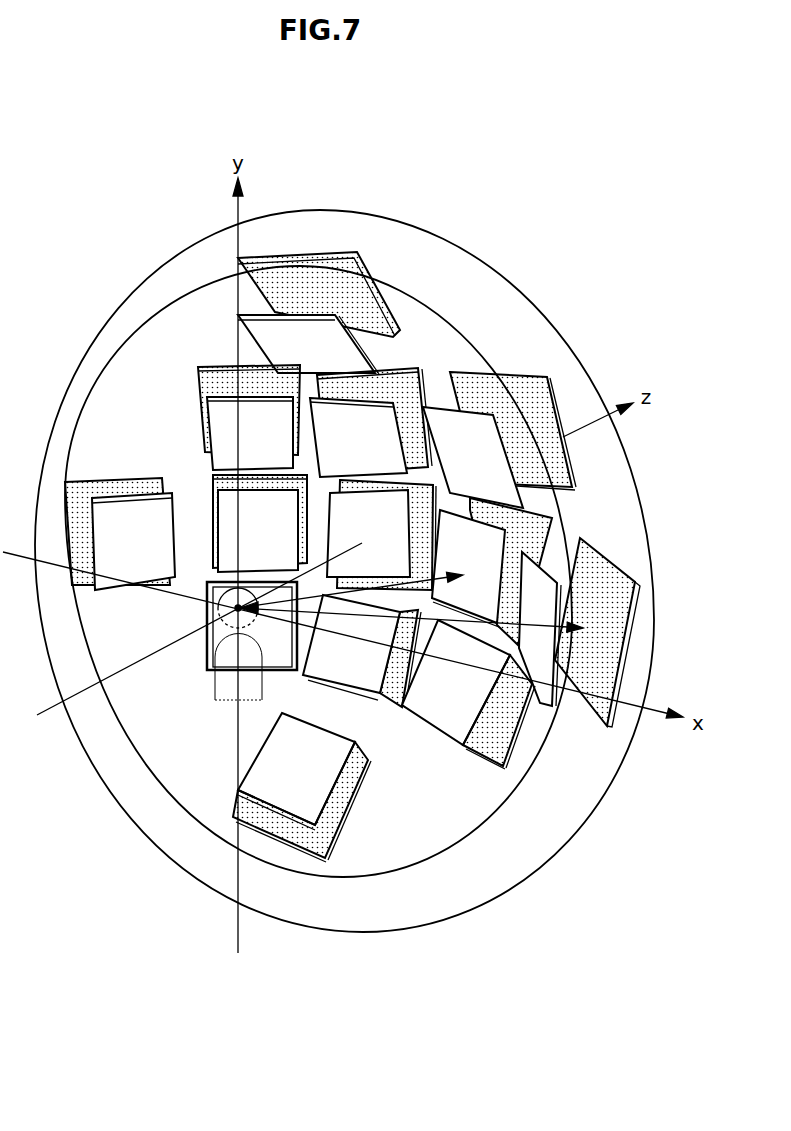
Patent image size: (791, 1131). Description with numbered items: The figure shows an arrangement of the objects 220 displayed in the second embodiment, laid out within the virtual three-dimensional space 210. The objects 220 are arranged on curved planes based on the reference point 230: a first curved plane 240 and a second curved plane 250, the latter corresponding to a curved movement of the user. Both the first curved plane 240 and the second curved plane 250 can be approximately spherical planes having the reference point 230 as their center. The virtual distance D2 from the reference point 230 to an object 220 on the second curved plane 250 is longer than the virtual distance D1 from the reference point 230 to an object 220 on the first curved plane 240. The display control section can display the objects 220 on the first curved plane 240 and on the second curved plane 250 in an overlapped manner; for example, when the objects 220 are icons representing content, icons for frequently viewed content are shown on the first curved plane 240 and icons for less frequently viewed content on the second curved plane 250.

The virtual three-dimensional space 210 is at (344, 565).
The objects 220 is at (422, 335).
The reference point 230 is at (203, 607).
The first curved plane 240 is at (477, 350).
The second curved plane 250 is at (572, 347).
The virtual distance D1 is at (368, 593).
The virtual distance D2 is at (408, 616).